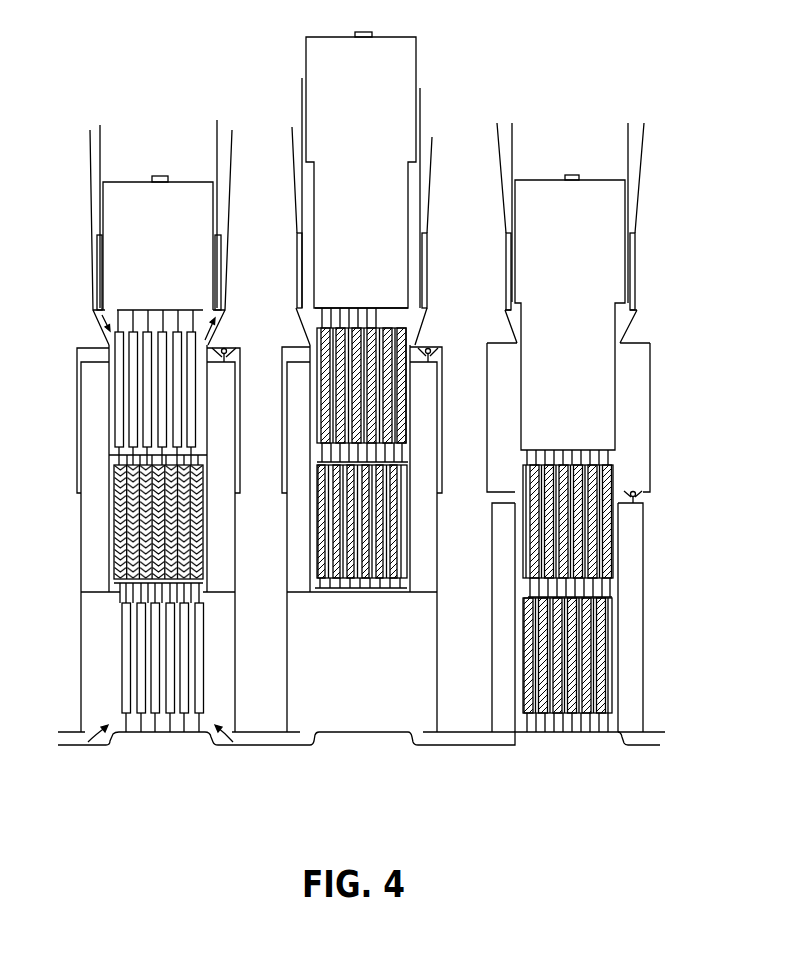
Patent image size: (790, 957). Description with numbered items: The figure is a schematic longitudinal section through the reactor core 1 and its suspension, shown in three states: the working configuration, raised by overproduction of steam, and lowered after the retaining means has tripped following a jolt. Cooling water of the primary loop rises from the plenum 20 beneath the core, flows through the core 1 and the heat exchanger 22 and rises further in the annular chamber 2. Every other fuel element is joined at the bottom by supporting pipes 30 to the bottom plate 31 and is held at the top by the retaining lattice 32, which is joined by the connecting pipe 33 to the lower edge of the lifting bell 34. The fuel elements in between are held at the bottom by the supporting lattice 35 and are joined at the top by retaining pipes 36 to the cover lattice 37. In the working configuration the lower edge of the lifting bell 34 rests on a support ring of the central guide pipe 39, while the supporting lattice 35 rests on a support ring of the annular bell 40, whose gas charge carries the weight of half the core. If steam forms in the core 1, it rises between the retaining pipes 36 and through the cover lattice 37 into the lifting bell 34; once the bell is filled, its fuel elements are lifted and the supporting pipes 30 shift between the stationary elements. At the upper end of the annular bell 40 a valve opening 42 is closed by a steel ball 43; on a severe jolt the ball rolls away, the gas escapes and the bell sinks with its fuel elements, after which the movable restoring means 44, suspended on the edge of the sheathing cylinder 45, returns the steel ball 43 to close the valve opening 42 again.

The core 1 is at (130, 507).
The annular chamber 2 is at (94, 153).
The plenum 20 is at (107, 703).
The heat exchanger 22 is at (98, 267).
The supporting pipes 30 is at (128, 637).
The bottom plate 31 is at (182, 734).
The retaining lattice 32 is at (112, 460).
The connecting pipe 33 is at (362, 361).
The lifting bell 34 is at (133, 211).
The supporting lattice 35 is at (118, 594).
The retaining pipes 36 is at (122, 405).
The cover lattice 37 is at (138, 308).
The central guide pipe 39 is at (630, 158).
The annular bell 40 is at (102, 562).
The valve opening 42 is at (242, 337).
The steel ball 43 is at (636, 492).
The restoring means 44 is at (446, 346).
The sheathing cylinder 45 is at (80, 443).